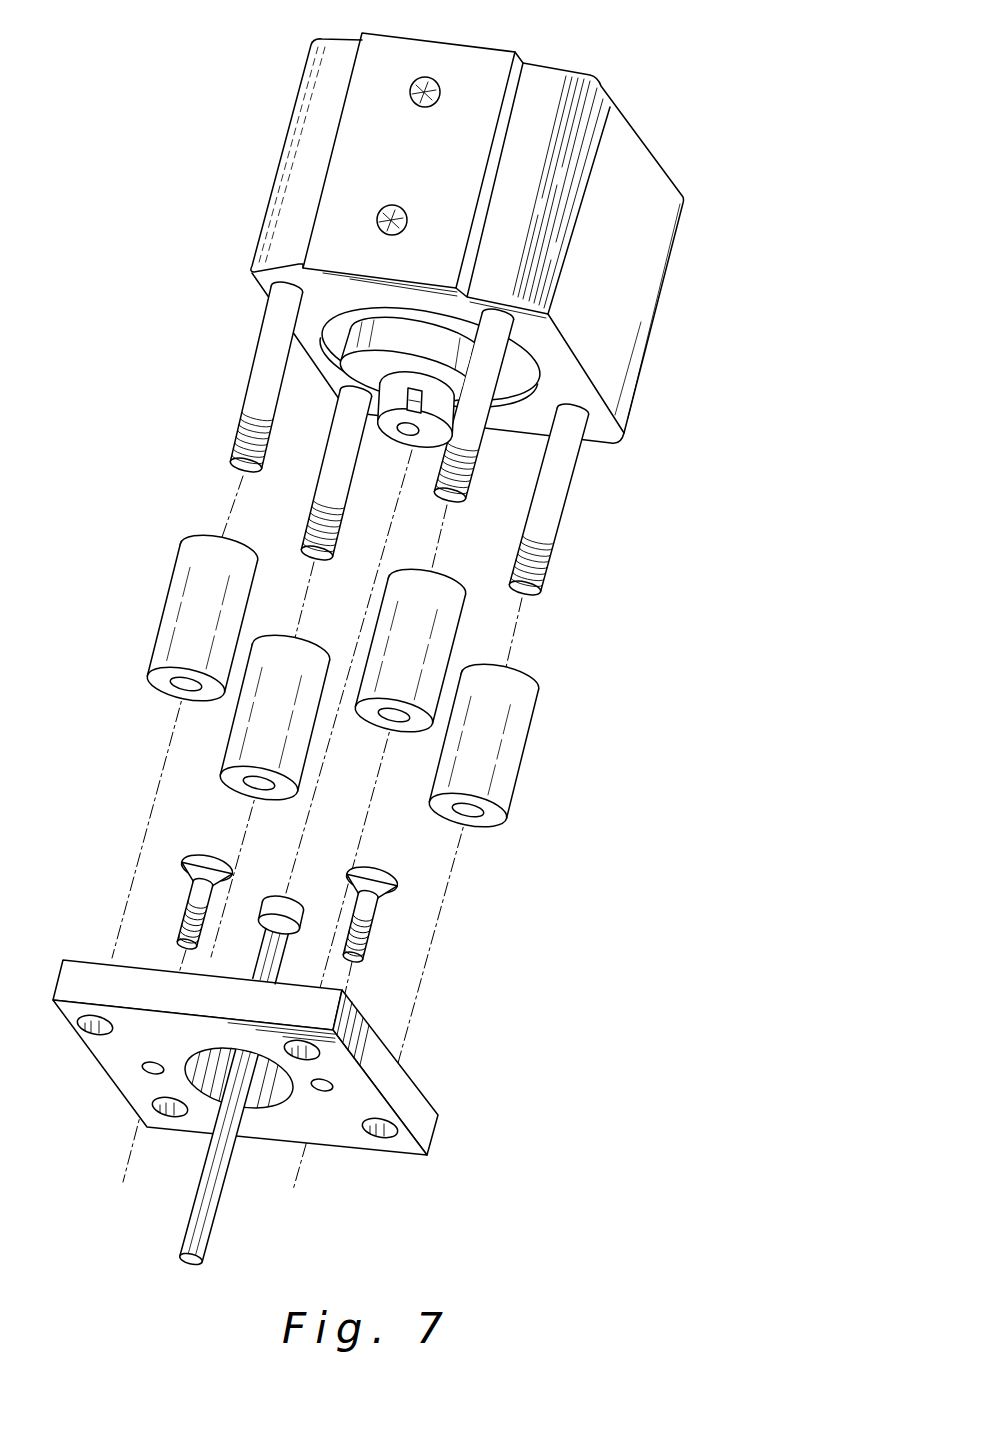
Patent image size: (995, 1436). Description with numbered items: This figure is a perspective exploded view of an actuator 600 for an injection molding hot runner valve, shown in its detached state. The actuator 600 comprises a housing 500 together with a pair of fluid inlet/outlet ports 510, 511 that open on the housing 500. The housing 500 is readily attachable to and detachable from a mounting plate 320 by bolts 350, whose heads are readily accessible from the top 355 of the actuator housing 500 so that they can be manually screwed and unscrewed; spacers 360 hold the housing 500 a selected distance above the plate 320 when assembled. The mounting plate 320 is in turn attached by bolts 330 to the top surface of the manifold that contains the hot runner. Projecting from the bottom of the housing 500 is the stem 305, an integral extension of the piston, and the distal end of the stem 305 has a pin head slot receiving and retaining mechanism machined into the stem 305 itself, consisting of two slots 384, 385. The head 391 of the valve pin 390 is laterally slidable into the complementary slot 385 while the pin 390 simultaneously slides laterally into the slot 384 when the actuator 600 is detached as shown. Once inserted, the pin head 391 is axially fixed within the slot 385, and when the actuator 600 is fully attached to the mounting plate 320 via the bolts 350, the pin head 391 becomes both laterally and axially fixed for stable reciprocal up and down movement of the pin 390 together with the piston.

The actuator 600 is at (429, 635).
The housing 500 is at (643, 143).
The top of the actuator housing 355 is at (568, 70).
The fluid inlet/outlet port 510 is at (428, 78).
The fluid inlet/outlet port 511 is at (380, 217).
The stem 305 is at (387, 398).
The slot 385 is at (441, 413).
The slot 384 is at (428, 436).
The bolts 350 is at (252, 367).
The spacers 360 is at (523, 763).
The bolts 330 is at (219, 857).
The head of valve pin 391 is at (274, 903).
The valve pin 390 is at (210, 1240).
The mounting plate 320 is at (410, 1073).